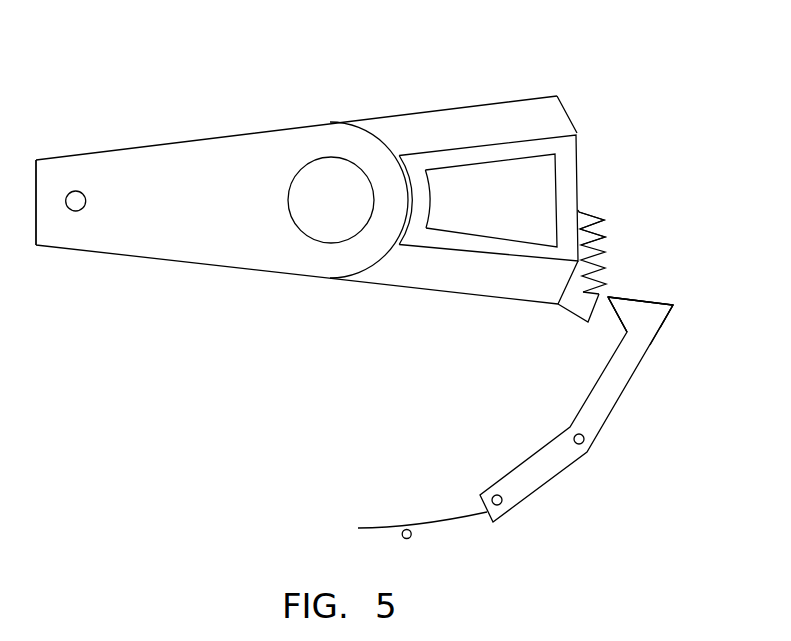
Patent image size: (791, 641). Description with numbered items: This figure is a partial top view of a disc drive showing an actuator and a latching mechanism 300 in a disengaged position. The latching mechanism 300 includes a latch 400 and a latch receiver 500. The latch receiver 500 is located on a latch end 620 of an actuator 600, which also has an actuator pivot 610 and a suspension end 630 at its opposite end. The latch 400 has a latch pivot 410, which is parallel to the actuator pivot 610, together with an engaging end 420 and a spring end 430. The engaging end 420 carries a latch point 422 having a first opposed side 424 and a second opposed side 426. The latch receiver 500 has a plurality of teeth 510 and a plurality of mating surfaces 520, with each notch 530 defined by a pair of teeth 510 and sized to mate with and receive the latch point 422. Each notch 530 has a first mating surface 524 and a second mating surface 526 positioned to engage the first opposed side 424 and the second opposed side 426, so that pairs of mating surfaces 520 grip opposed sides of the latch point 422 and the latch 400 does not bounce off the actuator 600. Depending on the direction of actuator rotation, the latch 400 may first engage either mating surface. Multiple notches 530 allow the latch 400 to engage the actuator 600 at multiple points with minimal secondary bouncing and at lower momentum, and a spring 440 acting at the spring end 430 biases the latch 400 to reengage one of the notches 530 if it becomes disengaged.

The latching mechanism 300 is at (686, 77).
The latch 400 is at (636, 376).
The latch pivot 410 is at (580, 445).
The engaging end 420 is at (664, 327).
The latch point 422 is at (672, 309).
The first opposed side 424 is at (657, 302).
The second opposed side 426 is at (607, 298).
The spring end 430 is at (480, 495).
The spring 440 is at (440, 526).
The latch receiver 500 is at (556, 306).
The teeth 510 is at (587, 216).
The mating surfaces 520 is at (598, 234).
The first mating surface 524 is at (601, 294).
The second mating surface 526 is at (586, 321).
The notch 530 is at (622, 256).
The actuator 600 is at (128, 253).
The actuator pivot 610 is at (320, 177).
The latch end 620 is at (567, 113).
The suspension end 630 is at (62, 157).